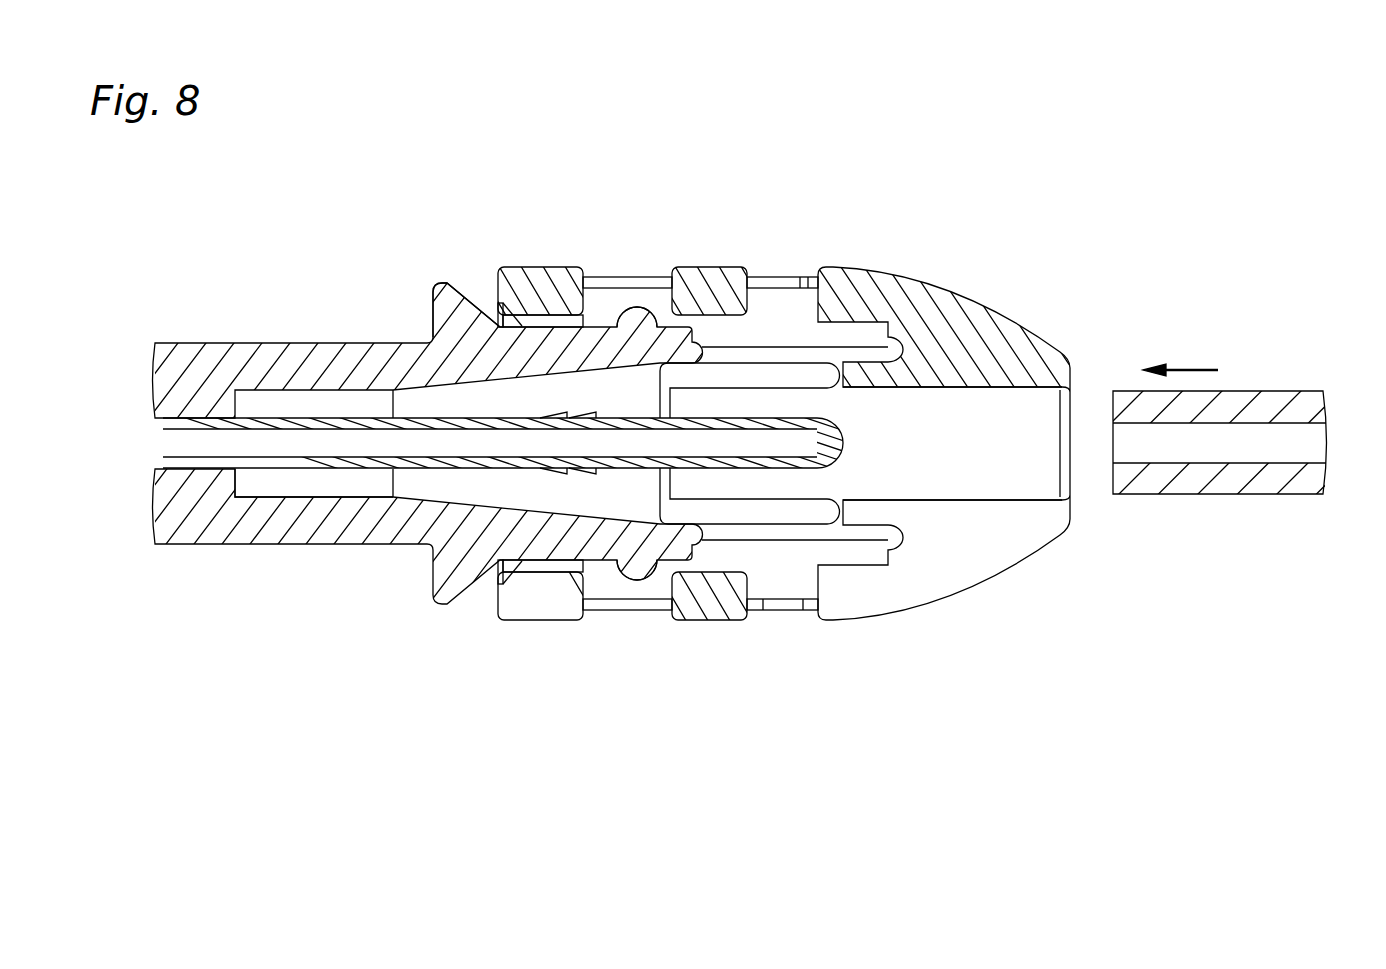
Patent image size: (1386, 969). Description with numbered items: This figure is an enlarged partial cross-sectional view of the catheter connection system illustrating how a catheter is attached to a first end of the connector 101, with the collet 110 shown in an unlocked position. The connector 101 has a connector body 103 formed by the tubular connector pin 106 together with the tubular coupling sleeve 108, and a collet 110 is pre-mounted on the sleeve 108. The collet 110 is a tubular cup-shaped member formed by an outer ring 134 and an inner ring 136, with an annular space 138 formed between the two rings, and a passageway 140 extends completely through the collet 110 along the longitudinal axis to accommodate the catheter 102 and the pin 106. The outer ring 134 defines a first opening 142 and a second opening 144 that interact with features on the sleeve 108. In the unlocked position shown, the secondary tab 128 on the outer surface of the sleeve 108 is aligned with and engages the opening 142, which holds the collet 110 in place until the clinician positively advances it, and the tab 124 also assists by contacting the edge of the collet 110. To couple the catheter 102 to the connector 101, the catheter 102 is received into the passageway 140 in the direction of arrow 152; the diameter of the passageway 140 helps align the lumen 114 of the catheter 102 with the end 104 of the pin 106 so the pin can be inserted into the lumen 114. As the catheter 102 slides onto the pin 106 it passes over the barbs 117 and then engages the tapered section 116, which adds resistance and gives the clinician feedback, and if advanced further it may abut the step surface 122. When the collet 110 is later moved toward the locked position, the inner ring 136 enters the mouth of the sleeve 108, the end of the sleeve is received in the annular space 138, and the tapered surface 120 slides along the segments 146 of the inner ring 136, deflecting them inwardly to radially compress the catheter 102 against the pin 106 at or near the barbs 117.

The connector 101 is at (660, 758).
The catheter 102 is at (1275, 390).
The connector body 103 is at (241, 328).
The end of the pin 104 is at (868, 578).
The connector pin 106 is at (435, 540).
The coupling sleeve 108 is at (350, 343).
The collet 110 is at (882, 268).
The lumen 114 is at (1280, 445).
The tapered section 116 is at (345, 470).
The barbs 117 is at (572, 470).
The tapered surface 120 is at (510, 618).
The step surface 122 is at (258, 485).
The tab 124 is at (447, 284).
The secondary tab 128 is at (640, 307).
The outer ring 134 is at (530, 267).
The inner ring 136 is at (765, 362).
The annular space 138 is at (763, 520).
The passageway 140 is at (1040, 418).
The first opening 142 is at (613, 300).
The second opening 144 is at (790, 305).
The segments 146 is at (743, 555).
The direction arrow 152 is at (1203, 368).